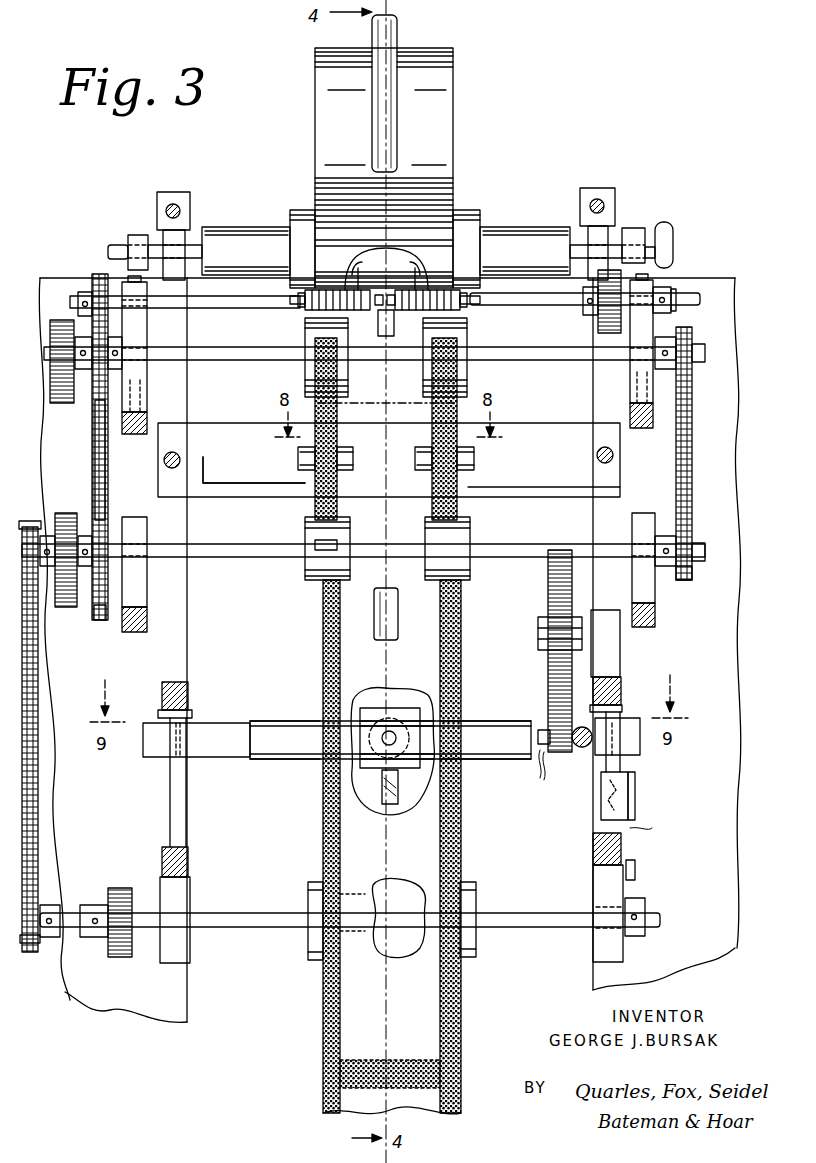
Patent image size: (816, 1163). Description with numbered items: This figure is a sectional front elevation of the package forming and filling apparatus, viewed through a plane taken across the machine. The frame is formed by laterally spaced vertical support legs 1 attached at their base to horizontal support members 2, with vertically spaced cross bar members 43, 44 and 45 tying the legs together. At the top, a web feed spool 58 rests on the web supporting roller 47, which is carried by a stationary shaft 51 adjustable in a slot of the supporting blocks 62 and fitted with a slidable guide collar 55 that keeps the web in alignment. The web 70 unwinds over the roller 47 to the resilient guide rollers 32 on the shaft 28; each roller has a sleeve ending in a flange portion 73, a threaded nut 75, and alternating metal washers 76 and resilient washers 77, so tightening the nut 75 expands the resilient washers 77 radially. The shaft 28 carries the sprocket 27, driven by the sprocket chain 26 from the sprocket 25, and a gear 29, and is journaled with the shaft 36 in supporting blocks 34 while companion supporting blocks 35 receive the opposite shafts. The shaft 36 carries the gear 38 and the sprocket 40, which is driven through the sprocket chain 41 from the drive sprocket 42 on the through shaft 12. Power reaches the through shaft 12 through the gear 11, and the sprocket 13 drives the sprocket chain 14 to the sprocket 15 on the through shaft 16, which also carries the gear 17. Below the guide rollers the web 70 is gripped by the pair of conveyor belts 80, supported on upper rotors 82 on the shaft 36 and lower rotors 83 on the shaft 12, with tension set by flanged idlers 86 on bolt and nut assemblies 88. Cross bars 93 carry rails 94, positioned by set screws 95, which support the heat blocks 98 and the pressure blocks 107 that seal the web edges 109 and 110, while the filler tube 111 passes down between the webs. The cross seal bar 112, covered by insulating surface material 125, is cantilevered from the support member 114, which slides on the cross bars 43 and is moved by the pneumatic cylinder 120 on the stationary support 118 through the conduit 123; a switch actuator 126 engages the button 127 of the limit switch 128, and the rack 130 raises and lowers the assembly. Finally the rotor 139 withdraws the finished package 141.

The vertical support legs 1 is at (125, 1003).
The horizontal support members 2 is at (42, 280).
The gear 11 is at (60, 512).
The through shaft 12 is at (242, 548).
The sprocket 13 is at (32, 528).
The sprocket chain 14 is at (22, 605).
The sprocket 15 is at (30, 960).
The through shaft 16 is at (248, 915).
The gear 17 is at (122, 888).
The sprocket 25 is at (103, 620).
The sprocket chain 26 is at (100, 440).
The sprocket 27 is at (97, 275).
The shaft 28 is at (198, 308).
The gear 29 is at (596, 295).
The guide rollers 32 is at (305, 311).
The supporting blocks 34 is at (147, 377).
The supporting blocks 35 is at (630, 375).
The shaft 36 is at (233, 362).
The gear 38 is at (52, 405).
The sprocket 40 is at (695, 342).
The sprocket chain 41 is at (697, 390).
The drive sprocket 42 is at (700, 583).
The cross bar members 43 is at (165, 855).
The cross bar members 44 is at (150, 620).
The cross bar members 45 is at (140, 434).
The web supporting roller 47 is at (540, 232).
The stationary shaft 51 is at (110, 247).
The guide collar 55 is at (300, 213).
The web feed spool 58 is at (457, 97).
The supporting blocks 62 is at (138, 235).
The web 70 is at (450, 205).
The flange portion 73 is at (385, 330).
The threaded nut 75 is at (300, 298).
The metal washers 76 is at (352, 310).
The resilient washers 77 is at (366, 262).
The conveyor belts 80 is at (318, 568).
The rotors 82 is at (306, 372).
The rotors 83 is at (352, 540).
The flanged idlers 86 is at (306, 468).
The bolt and nut assemblies 88 is at (298, 457).
The cross bars 93 is at (165, 465).
The rails 94 is at (210, 483).
The set screws 95 is at (192, 435).
The heat blocks 98 is at (386, 401).
The pressure blocks 107 is at (316, 513).
The web edge 109 is at (323, 660).
The web edge 110 is at (460, 655).
The filler tube 111 is at (397, 118).
The cross seal bar 112 is at (497, 731).
The support member 114 is at (222, 752).
The stationary support 118 is at (145, 755).
The pneumatic cylinder 120 is at (365, 760).
The conduit 123 is at (380, 798).
The insulating surface material 125 is at (303, 725).
The switch actuator 126 is at (622, 760).
The button 127 is at (602, 797).
The limit switch 128 is at (622, 797).
The rack 130 is at (548, 663).
The rotor 139 is at (308, 957).
The finished package 141 is at (433, 1016).